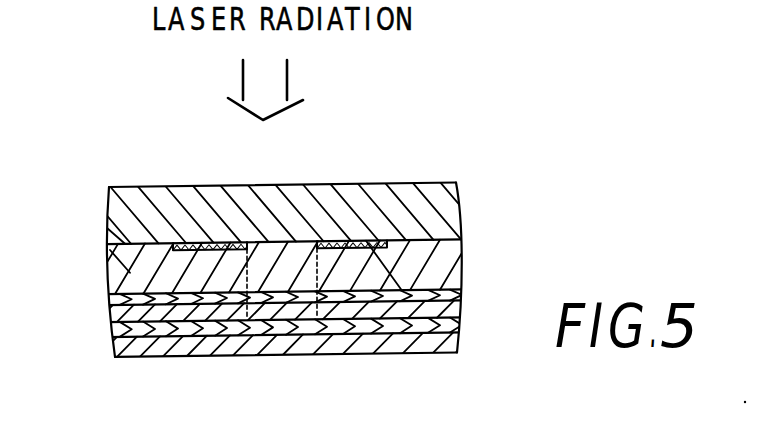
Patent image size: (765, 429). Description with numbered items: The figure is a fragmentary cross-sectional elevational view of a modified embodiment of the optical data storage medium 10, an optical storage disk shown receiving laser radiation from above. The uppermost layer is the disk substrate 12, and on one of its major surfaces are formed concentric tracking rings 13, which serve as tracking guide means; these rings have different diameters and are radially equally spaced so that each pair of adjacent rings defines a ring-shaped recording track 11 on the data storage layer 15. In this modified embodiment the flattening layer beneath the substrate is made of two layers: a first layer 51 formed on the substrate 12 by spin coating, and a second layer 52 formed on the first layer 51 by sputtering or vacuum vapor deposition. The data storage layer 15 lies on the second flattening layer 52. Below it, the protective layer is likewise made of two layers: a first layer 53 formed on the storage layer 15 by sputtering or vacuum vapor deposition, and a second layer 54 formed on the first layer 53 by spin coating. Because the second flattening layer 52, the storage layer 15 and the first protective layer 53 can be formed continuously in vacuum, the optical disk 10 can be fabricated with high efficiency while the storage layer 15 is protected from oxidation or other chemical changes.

The optical data storage medium 10 is at (100, 203).
The recording track 11 is at (282, 332).
The disk substrate 12 is at (437, 203).
The concentric rings 13 is at (432, 245).
The data storage layer 15 is at (112, 315).
The first flattening layer 51 is at (450, 265).
The second flattening layer 52 is at (457, 294).
The first protective layer 53 is at (456, 326).
The second protective layer 54 is at (448, 356).